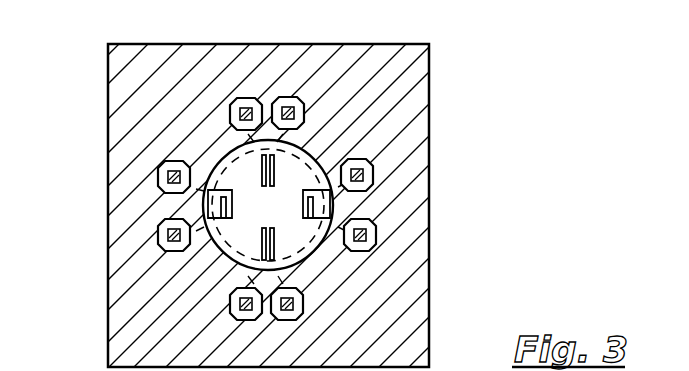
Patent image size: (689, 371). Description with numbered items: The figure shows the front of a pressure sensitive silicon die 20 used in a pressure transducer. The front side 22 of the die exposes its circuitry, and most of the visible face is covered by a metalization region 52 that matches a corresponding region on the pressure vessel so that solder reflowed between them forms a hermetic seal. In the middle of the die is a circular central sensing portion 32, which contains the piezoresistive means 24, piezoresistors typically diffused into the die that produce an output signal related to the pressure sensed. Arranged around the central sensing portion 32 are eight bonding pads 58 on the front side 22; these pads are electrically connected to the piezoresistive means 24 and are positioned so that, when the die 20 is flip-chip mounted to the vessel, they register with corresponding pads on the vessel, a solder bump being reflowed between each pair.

The pressure sensitive silicon die 20 is at (432, 203).
The front side 22 is at (180, 108).
The piezoresistive means 24 is at (303, 192).
The central sensing portion 32 is at (283, 219).
The metalization region 52 is at (340, 77).
The bonding pads 58 is at (288, 97).